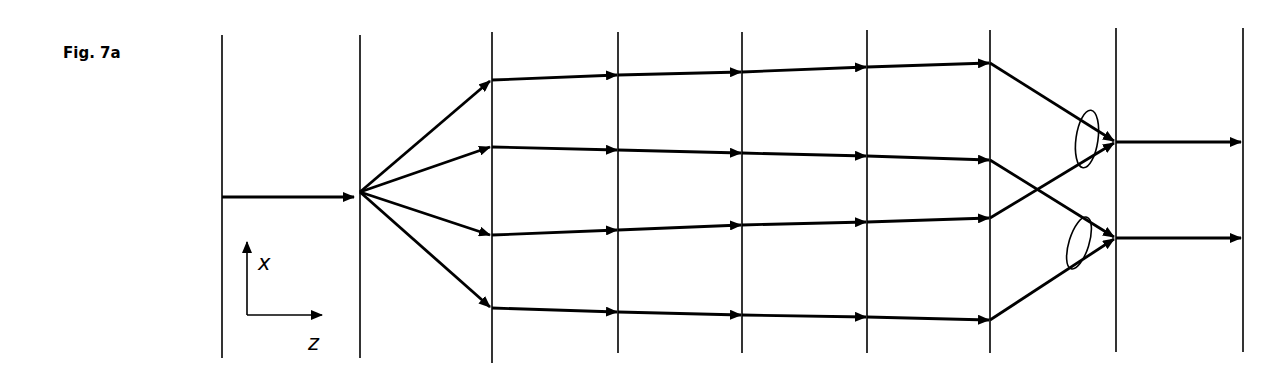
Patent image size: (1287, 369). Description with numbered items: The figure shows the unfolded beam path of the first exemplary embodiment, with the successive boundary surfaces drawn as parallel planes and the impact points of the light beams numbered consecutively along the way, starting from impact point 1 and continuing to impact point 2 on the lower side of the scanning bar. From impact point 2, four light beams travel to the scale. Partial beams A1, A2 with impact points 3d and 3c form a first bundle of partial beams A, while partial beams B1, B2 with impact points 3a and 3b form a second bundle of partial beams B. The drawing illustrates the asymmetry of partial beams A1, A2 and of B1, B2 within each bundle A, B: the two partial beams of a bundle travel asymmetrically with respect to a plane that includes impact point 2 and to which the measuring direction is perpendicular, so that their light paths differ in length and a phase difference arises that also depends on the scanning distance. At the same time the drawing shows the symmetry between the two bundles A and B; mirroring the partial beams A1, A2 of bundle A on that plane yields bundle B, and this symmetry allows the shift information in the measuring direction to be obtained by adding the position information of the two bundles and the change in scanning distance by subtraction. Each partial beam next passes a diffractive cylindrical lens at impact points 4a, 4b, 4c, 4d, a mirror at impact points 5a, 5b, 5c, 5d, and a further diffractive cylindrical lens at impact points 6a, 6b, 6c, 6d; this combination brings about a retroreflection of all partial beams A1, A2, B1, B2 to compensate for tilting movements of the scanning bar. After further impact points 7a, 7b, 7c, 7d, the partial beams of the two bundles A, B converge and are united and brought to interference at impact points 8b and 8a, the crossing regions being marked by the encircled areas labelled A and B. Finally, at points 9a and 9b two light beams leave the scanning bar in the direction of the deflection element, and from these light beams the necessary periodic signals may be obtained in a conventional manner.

The input plane / light source position 1 is at (288, 196).
The impact point 2 is at (344, 196).
The impact point 3a is at (425, 265).
The impact point 3b is at (425, 156).
The impact point 3c is at (425, 230).
The impact point 3d is at (425, 122).
The impact point 4a is at (554, 326).
The impact point 4b is at (554, 135).
The impact point 4c is at (554, 246).
The impact point 4d is at (554, 64).
The impact point 5a is at (679, 328).
The impact point 5b is at (679, 140).
The impact point 5c is at (679, 241).
The impact point 5d is at (679, 58).
The impact point 6a is at (804, 330).
The impact point 6b is at (804, 143).
The impact point 6c is at (804, 236).
The impact point 6d is at (804, 55).
The impact point 7a is at (928, 333).
The impact point 7b is at (928, 145).
The impact point 7c is at (928, 233).
The impact point 7d is at (928, 50).
The impact point 8a is at (1052, 240).
The impact point 8b is at (1053, 190).
The point 9a is at (1178, 252).
The point 9b is at (1179, 190).
The partial beam A1 is at (740, 49).
The partial beam A2 is at (740, 225).
The partial beam B1 is at (740, 309).
The partial beam B2 is at (740, 130).
The first bundle of partial beams A is at (1080, 110).
The second bundle of partial beams B is at (1072, 275).